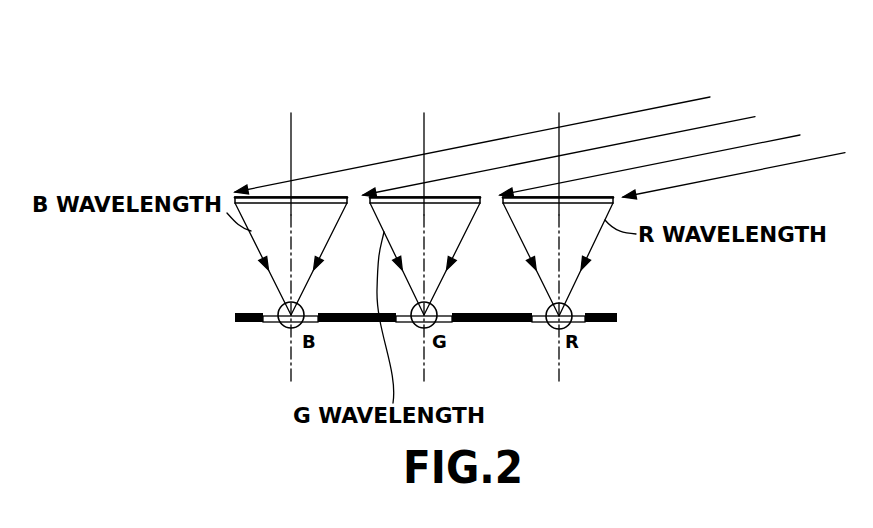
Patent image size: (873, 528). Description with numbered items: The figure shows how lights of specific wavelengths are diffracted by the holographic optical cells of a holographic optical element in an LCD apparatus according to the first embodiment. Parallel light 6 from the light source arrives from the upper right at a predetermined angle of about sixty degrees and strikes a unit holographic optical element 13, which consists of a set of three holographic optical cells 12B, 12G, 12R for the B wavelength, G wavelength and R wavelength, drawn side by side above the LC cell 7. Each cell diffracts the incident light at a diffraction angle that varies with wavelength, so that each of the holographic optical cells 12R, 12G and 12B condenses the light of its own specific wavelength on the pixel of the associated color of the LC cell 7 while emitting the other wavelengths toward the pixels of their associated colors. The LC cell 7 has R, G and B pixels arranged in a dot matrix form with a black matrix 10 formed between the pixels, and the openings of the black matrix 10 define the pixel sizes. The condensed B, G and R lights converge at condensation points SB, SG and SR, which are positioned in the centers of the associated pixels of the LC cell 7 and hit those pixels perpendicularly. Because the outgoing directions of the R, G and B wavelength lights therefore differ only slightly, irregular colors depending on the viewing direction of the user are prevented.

The unit holographic optical element 13 is at (270, 62).
The holographic optical cell for the B wavelength 12B is at (331, 197).
The holographic optical cell for the G wavelength 12G is at (455, 197).
The holographic optical cell for the R wavelength 12R is at (590, 197).
The parallel light 6 is at (547, 136).
The LC cell 7 is at (268, 327).
The black matrix 10 is at (356, 323).
The condensation point of the B wavelength light SB is at (281, 306).
The condensation point of the G wavelength light SG is at (432, 304).
The condensation point of the R wavelength light SR is at (567, 304).